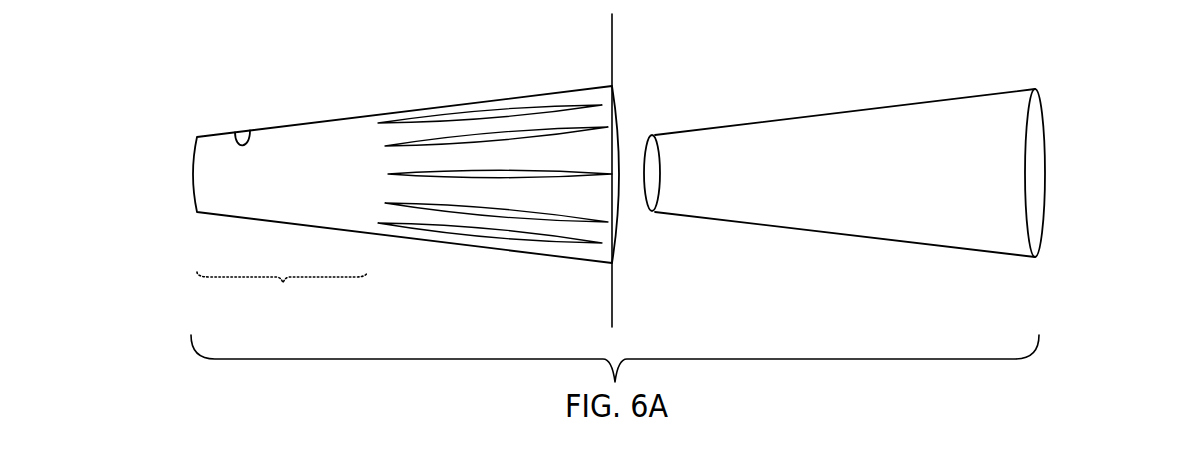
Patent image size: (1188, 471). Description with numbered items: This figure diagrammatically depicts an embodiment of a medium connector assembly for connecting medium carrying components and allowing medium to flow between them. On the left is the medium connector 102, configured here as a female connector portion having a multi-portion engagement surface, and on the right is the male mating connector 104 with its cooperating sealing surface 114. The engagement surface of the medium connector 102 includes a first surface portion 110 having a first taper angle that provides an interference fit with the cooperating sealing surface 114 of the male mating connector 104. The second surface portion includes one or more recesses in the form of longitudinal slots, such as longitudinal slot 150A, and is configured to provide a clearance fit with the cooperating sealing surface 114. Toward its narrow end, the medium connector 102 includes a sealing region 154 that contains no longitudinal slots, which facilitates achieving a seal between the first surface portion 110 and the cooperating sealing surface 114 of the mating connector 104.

The medium connector 102 is at (166, 170).
The male mating connector 104 is at (1064, 172).
The first surface portion 110 is at (237, 134).
The cooperating sealing surface 114 is at (893, 102).
The longitudinal slot 150A is at (448, 140).
The sealing region 154 is at (282, 289).